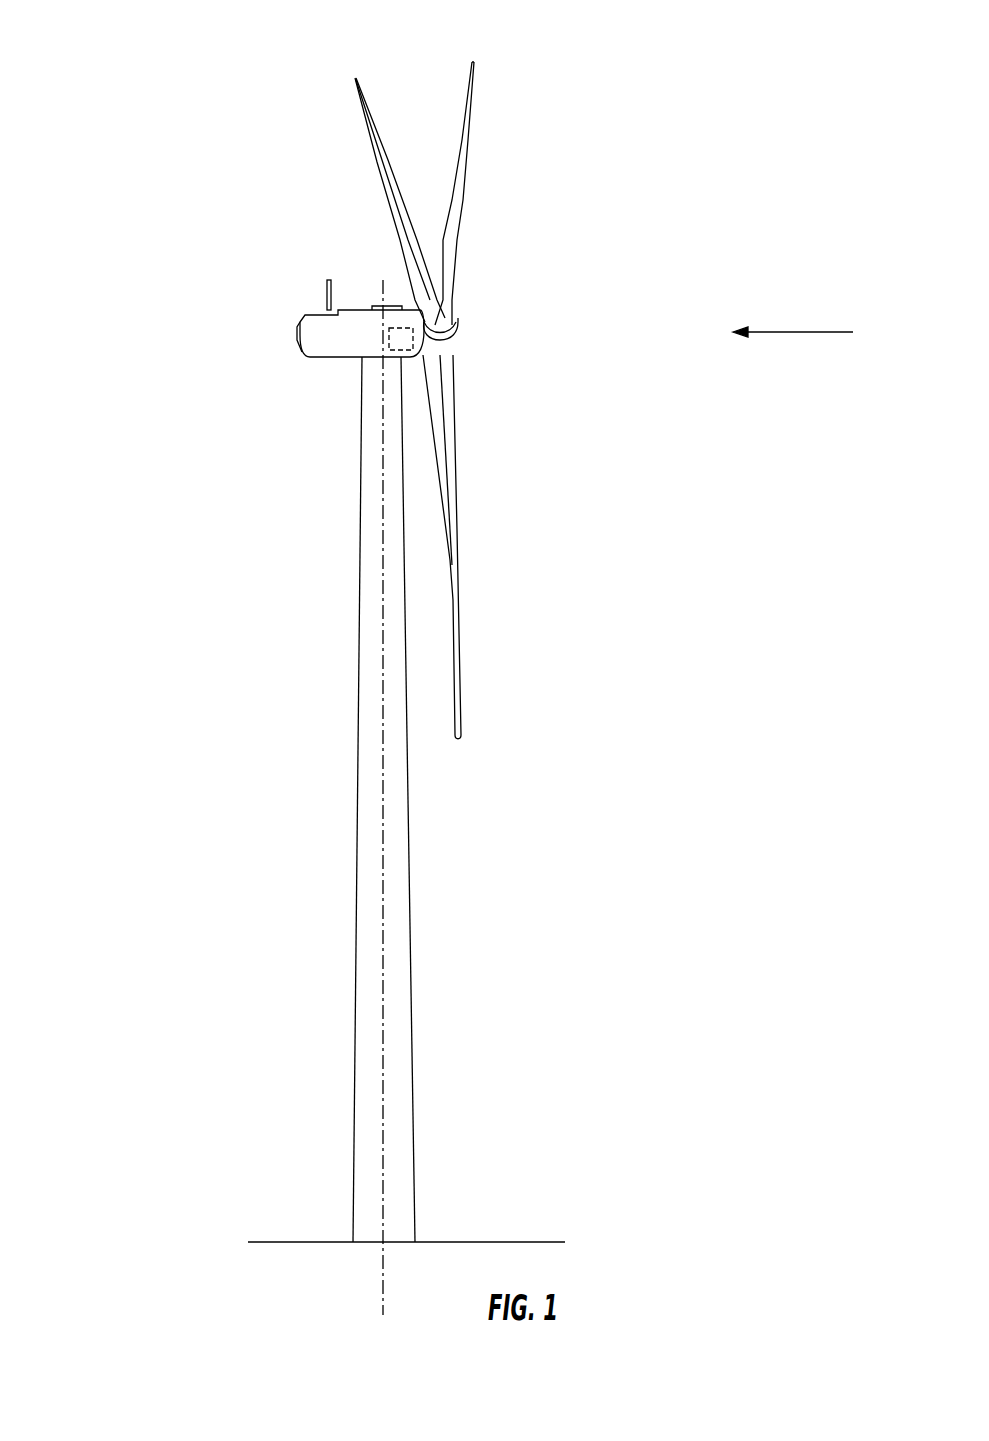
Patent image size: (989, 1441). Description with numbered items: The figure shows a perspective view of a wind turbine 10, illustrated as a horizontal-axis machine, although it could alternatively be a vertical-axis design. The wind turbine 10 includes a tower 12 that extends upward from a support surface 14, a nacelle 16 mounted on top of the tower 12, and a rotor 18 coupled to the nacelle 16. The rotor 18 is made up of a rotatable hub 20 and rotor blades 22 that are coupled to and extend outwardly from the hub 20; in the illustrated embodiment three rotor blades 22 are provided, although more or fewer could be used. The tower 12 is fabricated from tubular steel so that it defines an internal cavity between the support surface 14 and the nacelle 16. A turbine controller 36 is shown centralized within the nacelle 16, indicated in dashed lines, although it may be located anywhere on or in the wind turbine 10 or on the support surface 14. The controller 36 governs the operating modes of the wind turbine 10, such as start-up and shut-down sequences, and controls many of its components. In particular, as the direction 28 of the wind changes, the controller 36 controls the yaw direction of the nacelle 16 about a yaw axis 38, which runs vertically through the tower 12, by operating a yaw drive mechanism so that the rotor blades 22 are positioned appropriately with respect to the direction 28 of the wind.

The wind turbine 10 is at (85, 80).
The tower 12 is at (356, 980).
The support surface 14 is at (304, 1240).
The nacelle 16 is at (353, 363).
The rotor 18 is at (457, 400).
The rotatable hub 20 is at (460, 335).
The rotor blade 22 is at (377, 162).
The direction of the wind 28 is at (827, 332).
The turbine controller 36 is at (395, 352).
The yaw axis 38 is at (385, 813).